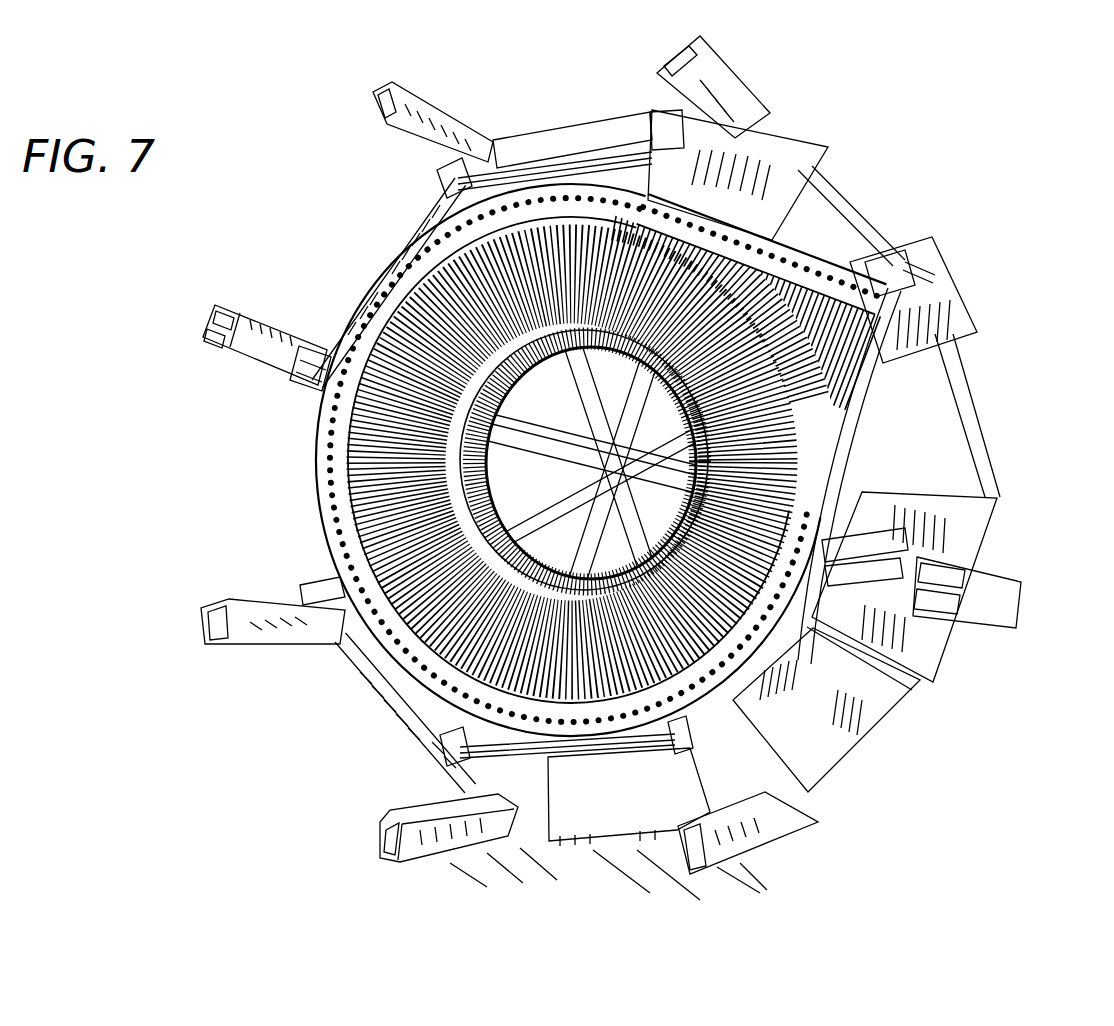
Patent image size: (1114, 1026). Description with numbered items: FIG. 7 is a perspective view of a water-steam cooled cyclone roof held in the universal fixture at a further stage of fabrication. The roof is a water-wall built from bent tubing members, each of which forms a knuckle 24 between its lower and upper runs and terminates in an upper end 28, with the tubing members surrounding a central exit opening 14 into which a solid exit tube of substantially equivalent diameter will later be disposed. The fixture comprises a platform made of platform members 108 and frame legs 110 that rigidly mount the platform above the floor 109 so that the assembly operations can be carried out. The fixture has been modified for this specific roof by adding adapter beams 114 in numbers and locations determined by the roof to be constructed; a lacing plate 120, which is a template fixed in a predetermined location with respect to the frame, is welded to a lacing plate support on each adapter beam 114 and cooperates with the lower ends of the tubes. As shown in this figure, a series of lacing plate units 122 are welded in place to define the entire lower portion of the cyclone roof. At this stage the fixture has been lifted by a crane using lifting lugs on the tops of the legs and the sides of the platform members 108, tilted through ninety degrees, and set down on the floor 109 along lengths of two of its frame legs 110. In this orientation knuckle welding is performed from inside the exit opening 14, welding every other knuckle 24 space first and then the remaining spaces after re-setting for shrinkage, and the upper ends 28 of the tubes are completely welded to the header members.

The exit opening 14 is at (540, 503).
The knuckle 24 is at (508, 398).
The upper end 28 is at (405, 272).
The platform members 108 is at (955, 383).
The floor 109 is at (607, 894).
The frame legs 110 is at (373, 92).
The adapter beams 114 is at (452, 176).
The lacing plate 120 is at (838, 258).
The lacing plate units 122 is at (586, 192).